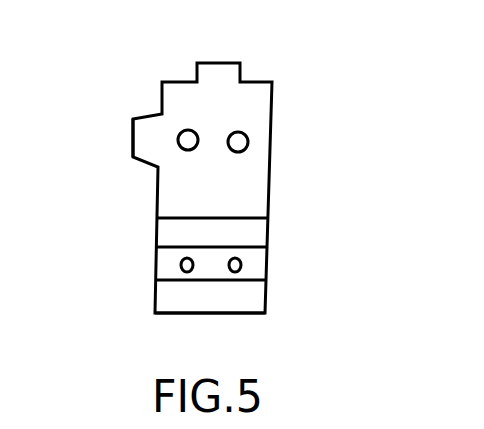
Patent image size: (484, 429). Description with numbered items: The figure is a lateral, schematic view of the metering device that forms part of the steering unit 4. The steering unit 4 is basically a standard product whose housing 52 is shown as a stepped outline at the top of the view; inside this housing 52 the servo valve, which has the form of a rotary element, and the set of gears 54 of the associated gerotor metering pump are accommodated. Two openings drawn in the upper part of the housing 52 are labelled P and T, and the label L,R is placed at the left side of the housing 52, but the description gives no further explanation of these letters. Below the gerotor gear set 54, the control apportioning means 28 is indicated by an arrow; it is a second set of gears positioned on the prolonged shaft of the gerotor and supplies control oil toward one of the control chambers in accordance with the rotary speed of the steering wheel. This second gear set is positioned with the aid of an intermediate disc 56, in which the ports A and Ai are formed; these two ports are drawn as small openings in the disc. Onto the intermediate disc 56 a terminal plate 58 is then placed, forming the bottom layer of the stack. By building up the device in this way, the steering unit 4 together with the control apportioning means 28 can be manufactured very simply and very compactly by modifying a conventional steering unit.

The steering unit 4 is at (288, 73).
The housing 52 is at (272, 103).
The set of gears 54 is at (245, 233).
The intermediate disc 56 is at (253, 268).
The terminal plate 58 is at (240, 300).
The control apportioning means 28 is at (136, 265).
The hole T is at (178, 146).
The hole P is at (272, 152).
The port A is at (181, 272).
The port Ai is at (240, 272).
The left/right side L,R is at (131, 135).